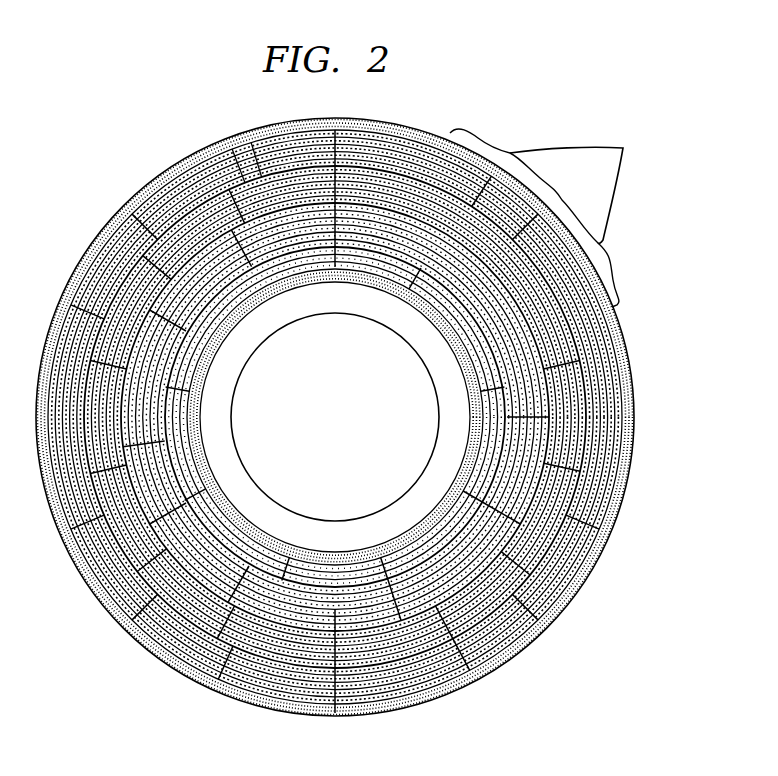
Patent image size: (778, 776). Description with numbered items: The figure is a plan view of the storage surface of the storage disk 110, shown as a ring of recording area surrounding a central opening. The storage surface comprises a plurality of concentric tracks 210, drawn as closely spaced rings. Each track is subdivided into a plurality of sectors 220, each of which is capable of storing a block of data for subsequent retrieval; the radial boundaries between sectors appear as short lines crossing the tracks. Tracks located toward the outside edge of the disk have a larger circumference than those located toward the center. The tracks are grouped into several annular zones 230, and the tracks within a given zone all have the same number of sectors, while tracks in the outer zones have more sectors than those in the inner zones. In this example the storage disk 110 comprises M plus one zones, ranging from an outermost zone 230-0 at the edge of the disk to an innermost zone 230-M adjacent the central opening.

The storage disk 110 is at (93, 189).
The concentric tracks 210 is at (507, 627).
The sectors 220 is at (561, 218).
The annular zones 230 is at (553, 459).
The outermost zone 230-0 is at (233, 149).
The innermost zone 230-M is at (270, 285).